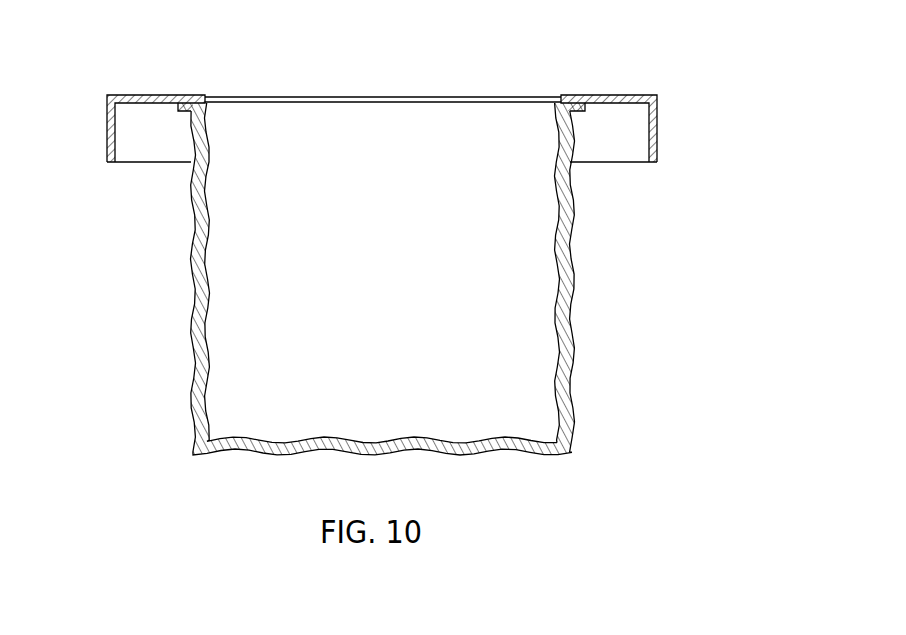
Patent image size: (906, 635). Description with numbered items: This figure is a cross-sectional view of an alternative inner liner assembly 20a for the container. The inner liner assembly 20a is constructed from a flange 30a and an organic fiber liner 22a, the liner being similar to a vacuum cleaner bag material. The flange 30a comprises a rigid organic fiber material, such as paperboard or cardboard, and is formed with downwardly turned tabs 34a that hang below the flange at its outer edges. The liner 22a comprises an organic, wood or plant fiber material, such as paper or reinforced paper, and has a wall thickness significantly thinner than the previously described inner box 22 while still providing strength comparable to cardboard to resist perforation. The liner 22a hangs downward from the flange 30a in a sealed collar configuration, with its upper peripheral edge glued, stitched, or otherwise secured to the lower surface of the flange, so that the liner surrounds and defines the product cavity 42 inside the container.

The flange 30a is at (585, 71).
The downwardly turned tabs 34a is at (657, 128).
The inner box 22 is at (540, 232).
The organic fiber liner 22a is at (570, 322).
The product cavity 42 is at (240, 242).
The inner liner assembly 20a is at (178, 342).